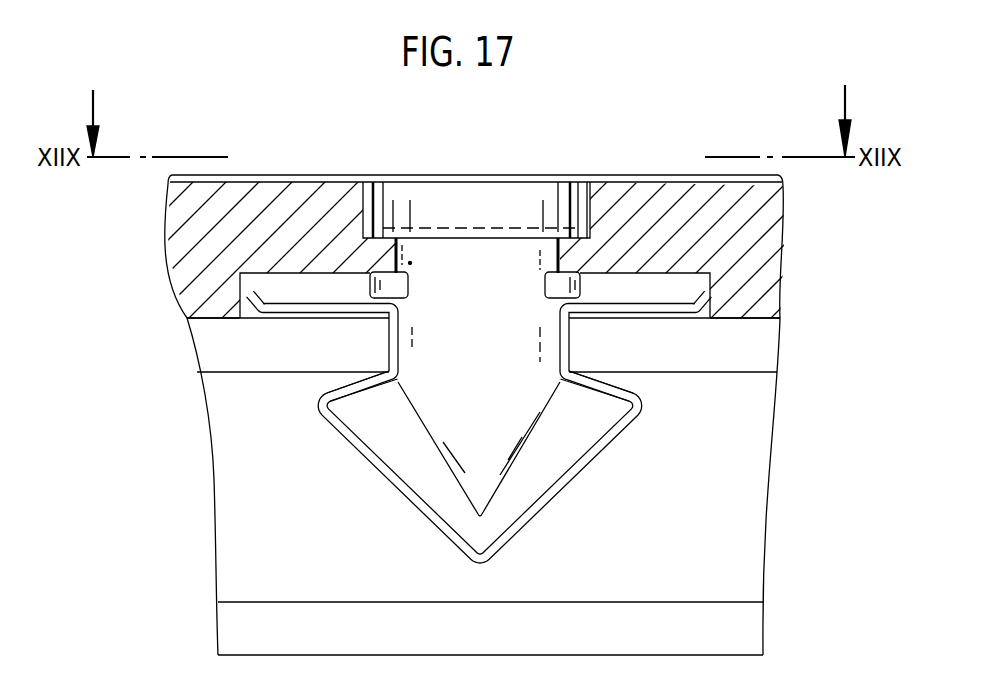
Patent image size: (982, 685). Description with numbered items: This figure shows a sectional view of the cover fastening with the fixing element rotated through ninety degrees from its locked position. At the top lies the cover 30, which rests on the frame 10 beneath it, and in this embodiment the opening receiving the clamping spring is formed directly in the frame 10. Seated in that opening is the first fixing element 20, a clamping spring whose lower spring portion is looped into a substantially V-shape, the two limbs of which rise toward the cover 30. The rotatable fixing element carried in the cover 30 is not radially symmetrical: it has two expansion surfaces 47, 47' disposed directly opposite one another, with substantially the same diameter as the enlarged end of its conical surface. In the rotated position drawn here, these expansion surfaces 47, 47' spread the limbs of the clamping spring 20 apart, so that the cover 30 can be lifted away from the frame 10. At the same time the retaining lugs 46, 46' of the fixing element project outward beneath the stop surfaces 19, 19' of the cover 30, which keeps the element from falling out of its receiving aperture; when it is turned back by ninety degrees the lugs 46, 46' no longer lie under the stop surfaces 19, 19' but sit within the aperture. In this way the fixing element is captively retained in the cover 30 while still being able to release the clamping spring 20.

The frame 10 is at (753, 494).
The first fixing element 20 is at (587, 485).
The cover 30 is at (763, 215).
The stop surface 19 is at (376, 205).
The stop surface 19' is at (566, 205).
The retaining lug 46 is at (587, 309).
The retaining lug 46' is at (377, 312).
The expansion surface 47 is at (597, 399).
The expansion surface 47' is at (362, 399).